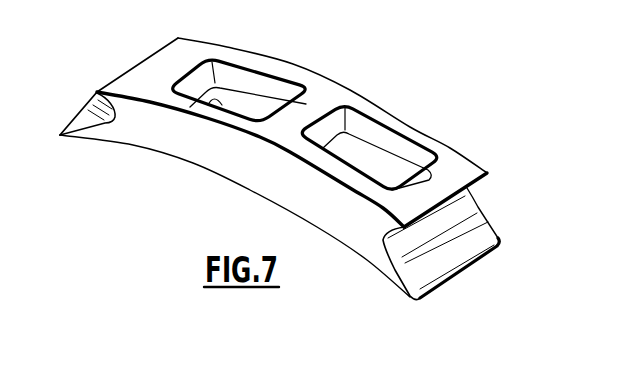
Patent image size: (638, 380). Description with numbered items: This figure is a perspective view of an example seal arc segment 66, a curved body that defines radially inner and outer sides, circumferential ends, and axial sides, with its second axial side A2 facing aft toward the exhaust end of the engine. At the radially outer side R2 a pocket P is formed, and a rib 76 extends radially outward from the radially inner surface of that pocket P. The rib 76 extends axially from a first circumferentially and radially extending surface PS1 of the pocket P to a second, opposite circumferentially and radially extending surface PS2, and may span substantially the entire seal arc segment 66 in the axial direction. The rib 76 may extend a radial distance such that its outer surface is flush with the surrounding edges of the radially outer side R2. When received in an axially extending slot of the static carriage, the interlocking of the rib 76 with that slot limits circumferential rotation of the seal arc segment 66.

The seal arc segment 66 is at (198, 181).
The rib 76 is at (323, 103).
The pocket P is at (248, 92).
The first circumferentially and radially extending surface PS1 is at (208, 104).
The second circumferentially and radially extending surface PS2 is at (226, 73).
The radially outer side R2 is at (462, 173).
The second axial side A2 is at (538, 158).